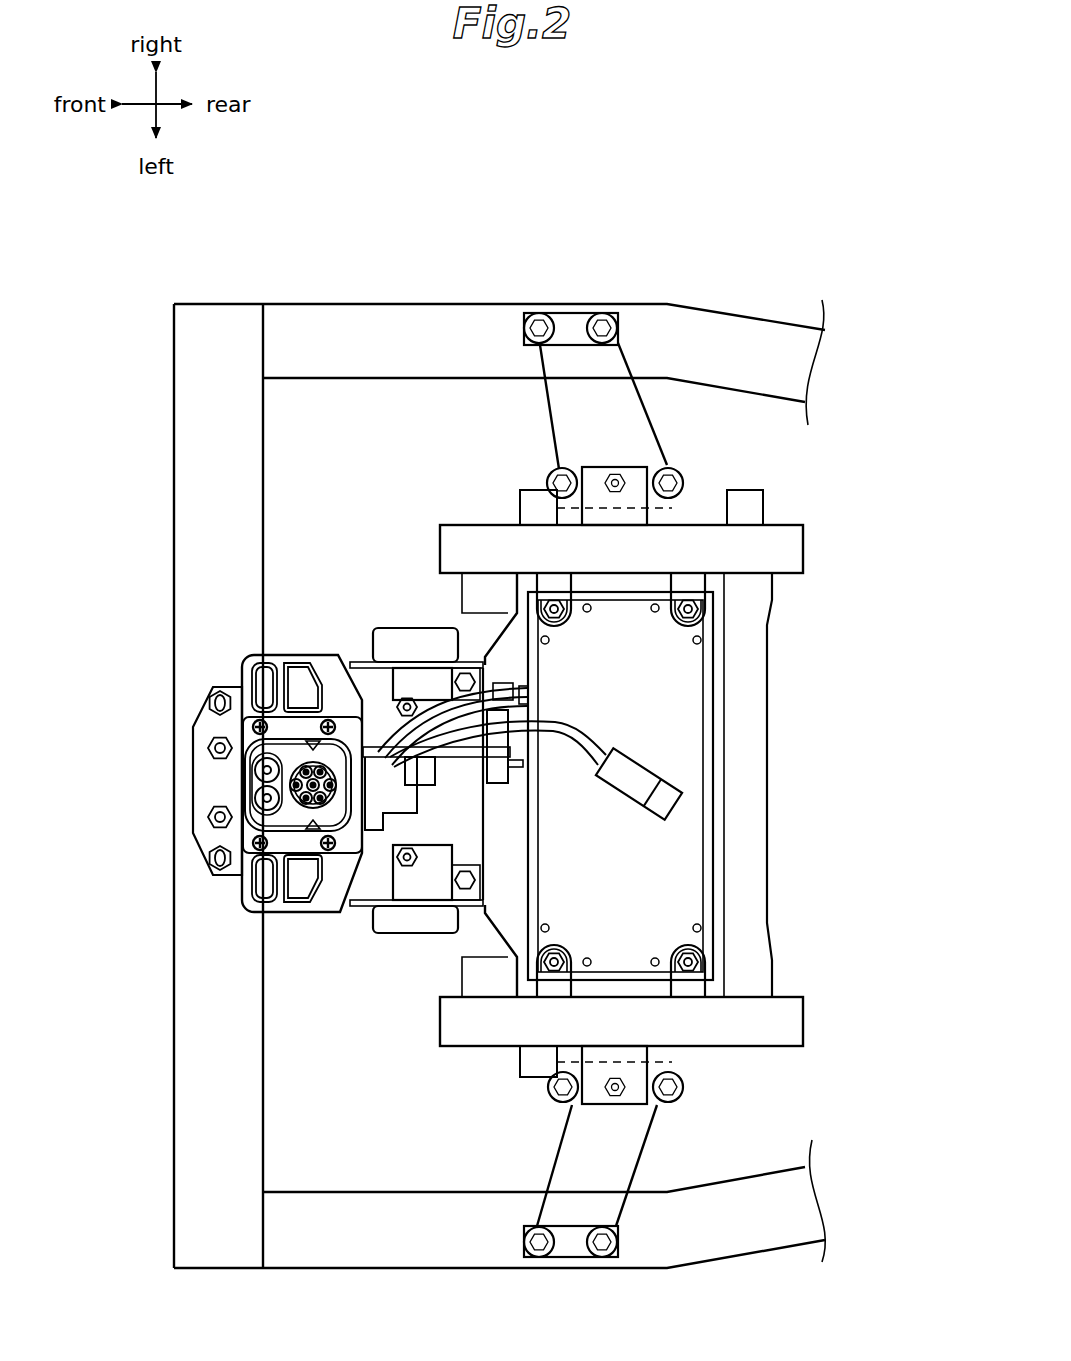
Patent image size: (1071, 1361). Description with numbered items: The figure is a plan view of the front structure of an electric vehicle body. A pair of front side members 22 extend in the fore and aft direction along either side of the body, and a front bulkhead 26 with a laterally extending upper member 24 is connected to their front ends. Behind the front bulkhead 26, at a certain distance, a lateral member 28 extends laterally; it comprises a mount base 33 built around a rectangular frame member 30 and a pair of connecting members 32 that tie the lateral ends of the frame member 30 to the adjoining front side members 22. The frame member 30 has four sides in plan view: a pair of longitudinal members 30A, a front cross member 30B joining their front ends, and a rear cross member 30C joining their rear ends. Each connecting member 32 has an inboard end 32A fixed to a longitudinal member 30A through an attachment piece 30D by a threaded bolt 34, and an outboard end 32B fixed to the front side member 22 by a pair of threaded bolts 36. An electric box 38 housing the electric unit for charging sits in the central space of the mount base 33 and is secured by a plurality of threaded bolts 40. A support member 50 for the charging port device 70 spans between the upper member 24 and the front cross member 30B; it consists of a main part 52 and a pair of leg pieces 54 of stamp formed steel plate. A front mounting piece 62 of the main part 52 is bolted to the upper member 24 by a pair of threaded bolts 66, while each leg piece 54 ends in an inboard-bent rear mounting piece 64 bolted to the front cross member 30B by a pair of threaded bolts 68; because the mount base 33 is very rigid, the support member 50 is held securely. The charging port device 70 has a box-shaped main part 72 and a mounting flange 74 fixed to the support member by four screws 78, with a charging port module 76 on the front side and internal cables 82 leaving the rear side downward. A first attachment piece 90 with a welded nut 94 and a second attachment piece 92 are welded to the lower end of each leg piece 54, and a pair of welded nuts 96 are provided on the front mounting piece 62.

The front side member 22 is at (372, 308).
The upper member 24 is at (256, 462).
The front bulkhead 26 is at (194, 1093).
The lateral member 28 is at (703, 462).
The frame member 30 is at (742, 888).
The longitudinal member 30A is at (780, 528).
The front cross member 30B is at (475, 580).
The rear cross member 30C is at (748, 795).
The attachment piece 30D is at (598, 470).
The connecting member 32 is at (632, 402).
The inboard end 32A is at (650, 527).
The outboard end 32B is at (578, 346).
The mount base 33 is at (776, 686).
The threaded bolt 34 is at (613, 494).
The threaded bolts 36 is at (601, 313).
The electric box 38 is at (692, 743).
The threaded bolts 40 is at (553, 600).
The support member 50 is at (243, 652).
The main part 52 is at (297, 914).
The leg piece 54 is at (365, 660).
The front mounting piece 62 is at (207, 797).
The rear mounting piece 64 is at (470, 668).
The threaded bolts 66 is at (210, 700).
The threaded bolts 68 is at (478, 687).
The charging port device 70 is at (297, 727).
The main part 72 is at (388, 798).
The mounting flange 74 is at (258, 898).
The charging port module 76 is at (254, 797).
The screws 78 is at (272, 660).
The internal cables 82 is at (588, 736).
The first attachment piece 90 is at (420, 666).
The second attachment piece 92 is at (430, 645).
The welded nut 94 is at (405, 700).
The welded nuts 96 is at (210, 745).